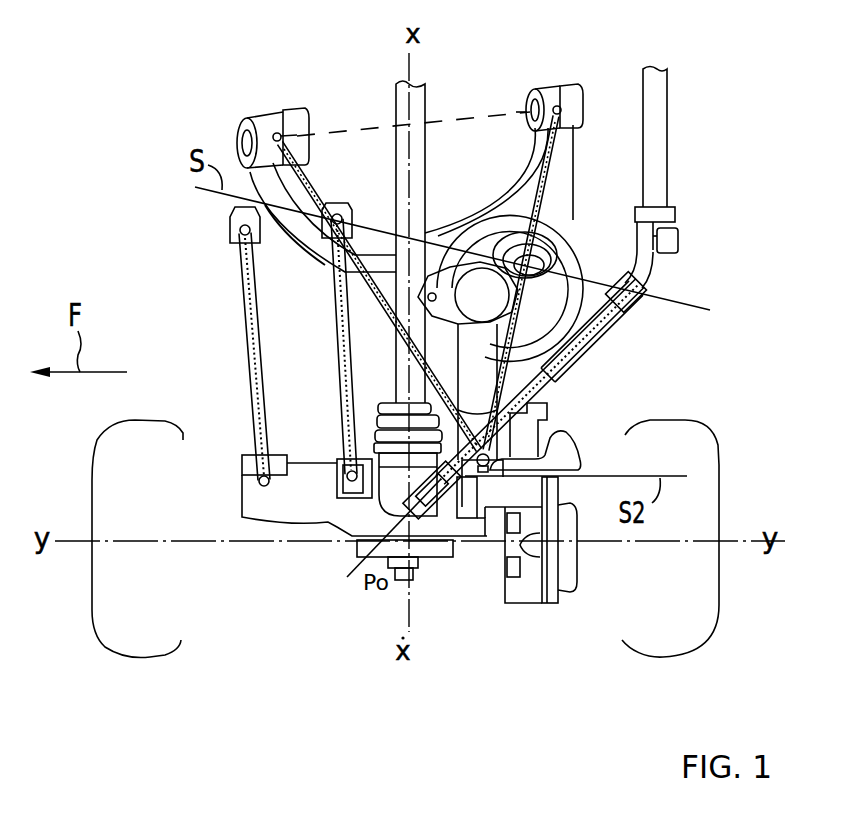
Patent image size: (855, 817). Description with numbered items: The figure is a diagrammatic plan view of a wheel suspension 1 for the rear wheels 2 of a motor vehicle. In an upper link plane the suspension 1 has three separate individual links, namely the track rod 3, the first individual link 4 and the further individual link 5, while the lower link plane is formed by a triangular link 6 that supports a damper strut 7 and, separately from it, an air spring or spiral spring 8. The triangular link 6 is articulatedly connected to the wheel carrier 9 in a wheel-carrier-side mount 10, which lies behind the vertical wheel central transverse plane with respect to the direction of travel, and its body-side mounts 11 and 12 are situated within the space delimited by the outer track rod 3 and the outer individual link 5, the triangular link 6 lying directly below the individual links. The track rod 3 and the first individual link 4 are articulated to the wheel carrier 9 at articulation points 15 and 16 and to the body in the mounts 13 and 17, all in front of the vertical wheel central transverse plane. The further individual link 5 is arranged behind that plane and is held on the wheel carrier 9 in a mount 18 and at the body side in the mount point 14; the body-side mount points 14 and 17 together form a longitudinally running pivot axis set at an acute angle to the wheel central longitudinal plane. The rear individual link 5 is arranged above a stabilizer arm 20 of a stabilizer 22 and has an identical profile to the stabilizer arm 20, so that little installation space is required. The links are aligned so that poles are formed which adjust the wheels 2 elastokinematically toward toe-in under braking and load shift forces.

The wheel suspension 1 is at (118, 188).
The rear wheel 2 is at (692, 603).
The track rod 3 is at (253, 362).
The first individual link 4 is at (345, 333).
The further individual link 5 is at (580, 355).
The triangular link 6 is at (565, 192).
The damper strut 7 is at (543, 388).
The air spring or spiral spring 8 is at (528, 262).
The wheel carrier 9 is at (312, 502).
The wheel-carrier-side mount 10 is at (572, 457).
The body-side mount 11 is at (256, 122).
The body-side mount 12 is at (566, 84).
The body-side mount 13 is at (248, 230).
The body-side mount point 14 is at (648, 280).
The articulation point 15 is at (262, 482).
The articulation point 16 is at (350, 470).
The body-side mount 17 is at (342, 205).
The mount 18 is at (463, 535).
The stabilizer arm 20 is at (623, 323).
The stabilizer 22 is at (660, 143).